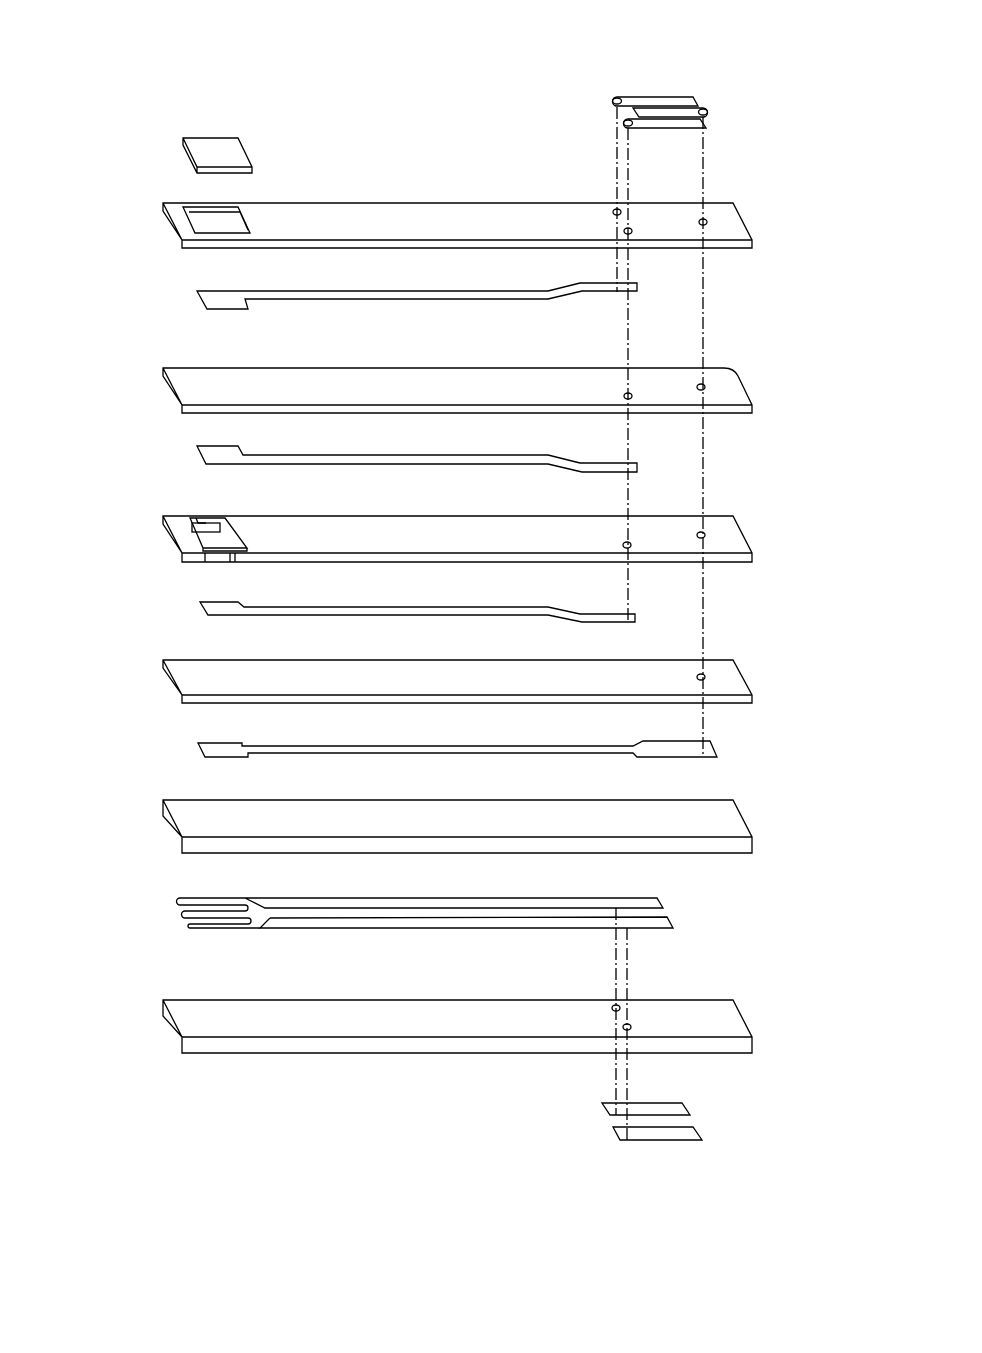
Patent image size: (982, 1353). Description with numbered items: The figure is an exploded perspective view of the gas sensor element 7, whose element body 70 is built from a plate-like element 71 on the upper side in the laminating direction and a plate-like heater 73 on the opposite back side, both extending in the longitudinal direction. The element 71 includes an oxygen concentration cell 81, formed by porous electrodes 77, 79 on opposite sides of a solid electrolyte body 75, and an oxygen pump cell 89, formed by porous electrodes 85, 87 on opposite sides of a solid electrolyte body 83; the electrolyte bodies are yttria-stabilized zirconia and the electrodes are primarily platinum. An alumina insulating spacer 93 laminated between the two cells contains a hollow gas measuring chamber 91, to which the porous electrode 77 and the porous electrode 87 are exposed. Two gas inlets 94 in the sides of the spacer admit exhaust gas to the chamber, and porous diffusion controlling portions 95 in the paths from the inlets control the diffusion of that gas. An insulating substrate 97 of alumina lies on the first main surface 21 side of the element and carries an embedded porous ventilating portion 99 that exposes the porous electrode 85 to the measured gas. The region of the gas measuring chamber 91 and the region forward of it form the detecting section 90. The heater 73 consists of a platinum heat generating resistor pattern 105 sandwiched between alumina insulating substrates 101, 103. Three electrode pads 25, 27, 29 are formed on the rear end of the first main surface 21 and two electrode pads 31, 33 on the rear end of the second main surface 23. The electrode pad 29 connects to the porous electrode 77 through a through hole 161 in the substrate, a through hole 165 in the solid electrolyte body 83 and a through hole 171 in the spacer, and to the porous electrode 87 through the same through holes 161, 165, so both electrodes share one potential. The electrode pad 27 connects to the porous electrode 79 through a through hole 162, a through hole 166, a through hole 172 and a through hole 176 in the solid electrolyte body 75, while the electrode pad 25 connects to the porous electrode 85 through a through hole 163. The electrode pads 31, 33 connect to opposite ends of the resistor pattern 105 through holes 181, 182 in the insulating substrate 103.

The gas sensor element 7 is at (440, 72).
The first main surface 21 is at (267, 210).
The second main surface 23 is at (373, 1053).
The electrode pad 25 is at (665, 102).
The electrode pad 27 is at (697, 110).
The electrode pad 29 is at (687, 130).
The electrode pad 31 is at (662, 1107).
The electrode pad 33 is at (672, 1133).
The element body 70 is at (66, 438).
The element 71 is at (132, 158).
The heater 73 is at (132, 788).
The solid electrolyte body 75 is at (355, 666).
The porous electrode 77 is at (227, 607).
The porous electrode 79 is at (225, 748).
The oxygen concentration cell 81 is at (770, 667).
The solid electrolyte body 83 is at (355, 372).
The porous electrode 85 is at (227, 293).
The porous electrode 87 is at (227, 453).
The oxygen pump cell 89 is at (770, 367).
The detecting section 90 is at (155, 111).
The gas measuring chamber 91 is at (230, 540).
The insulating spacer 93 is at (437, 525).
The gas inlet 94 is at (197, 518).
The diffusion controlling portion 95 is at (212, 522).
The insulating substrate 97 is at (452, 210).
The ventilating portion 99 is at (233, 155).
The insulating substrate 101 is at (350, 803).
The insulating substrate 103 is at (370, 1010).
The heat generating resistor pattern 105 is at (213, 928).
The through hole 161 is at (628, 231).
The through hole 162 is at (703, 222).
The through hole 163 is at (617, 212).
The through hole 165 is at (628, 396).
The through hole 166 is at (701, 387).
The through hole 171 is at (627, 545).
The through hole 172 is at (701, 535).
The through hole 176 is at (701, 677).
The through hole 181 is at (616, 1008).
The through hole 182 is at (627, 1027).